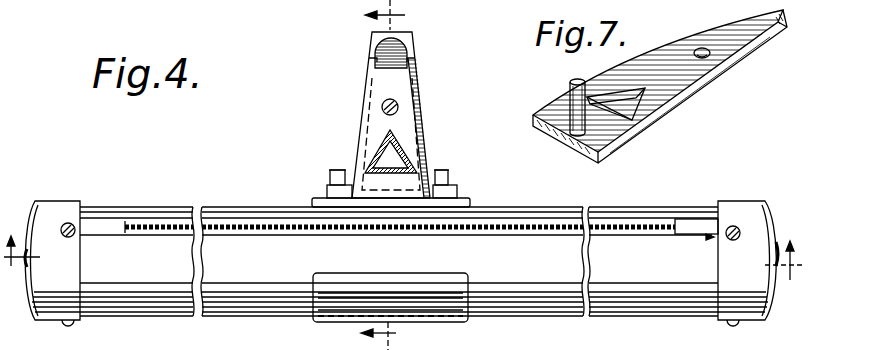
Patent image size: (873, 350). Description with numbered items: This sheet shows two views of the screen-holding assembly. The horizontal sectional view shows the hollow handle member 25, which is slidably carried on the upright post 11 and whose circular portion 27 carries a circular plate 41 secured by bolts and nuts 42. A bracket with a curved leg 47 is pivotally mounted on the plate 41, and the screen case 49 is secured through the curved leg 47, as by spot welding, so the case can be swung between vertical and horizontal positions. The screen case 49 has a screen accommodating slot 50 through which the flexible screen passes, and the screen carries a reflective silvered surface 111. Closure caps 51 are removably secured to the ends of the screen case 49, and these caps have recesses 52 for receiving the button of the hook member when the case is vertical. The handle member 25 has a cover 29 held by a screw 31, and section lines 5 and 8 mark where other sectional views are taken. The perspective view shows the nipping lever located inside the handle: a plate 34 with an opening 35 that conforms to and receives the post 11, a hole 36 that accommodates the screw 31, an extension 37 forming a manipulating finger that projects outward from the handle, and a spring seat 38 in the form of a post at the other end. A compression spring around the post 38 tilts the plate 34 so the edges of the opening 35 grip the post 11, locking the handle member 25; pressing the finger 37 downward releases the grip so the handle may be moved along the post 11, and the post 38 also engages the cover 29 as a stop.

In FIG. 4, the section line 5- 5 is at (391, 175).
In FIG. 4, the section line 8- 8 is at (403, 268).
In FIG. 4, the upright tube or post 11 is at (403, 147).
In FIG. 4, the hollow handle member 25 is at (427, 97).
In FIG. 4, the circular portion 27 is at (457, 192).
In FIG. 4, the cover 29 is at (362, 97).
In FIG. 4, the screw 31 is at (387, 108).
In FIG. 7, the nipping lever plate 34 is at (680, 93).
In FIG. 7, the opening 35 is at (655, 122).
In FIG. 7, the hole 36 is at (702, 48).
In FIG. 4, the extension 37 is at (397, 52).
In FIG. 7, the spring seat post 38 is at (570, 93).
In FIG. 4, the circular plate 41 is at (457, 202).
In FIG. 4, the bolts and nuts 42 is at (330, 173).
In FIG. 4, the curved leg 47 is at (447, 312).
In FIG. 4, the screen case 49 is at (240, 303).
In FIG. 4, the screen accommodating slot 50 is at (225, 226).
In FIG. 4, the closure caps 51 is at (68, 203).
In FIG. 4, the recesses 52 is at (28, 258).
In FIG. 4, the reflective silvered surface 111 is at (150, 225).